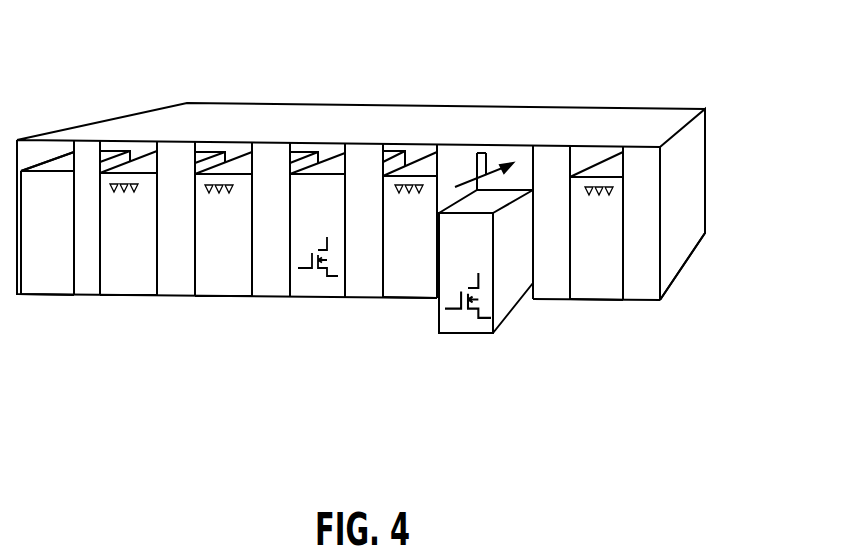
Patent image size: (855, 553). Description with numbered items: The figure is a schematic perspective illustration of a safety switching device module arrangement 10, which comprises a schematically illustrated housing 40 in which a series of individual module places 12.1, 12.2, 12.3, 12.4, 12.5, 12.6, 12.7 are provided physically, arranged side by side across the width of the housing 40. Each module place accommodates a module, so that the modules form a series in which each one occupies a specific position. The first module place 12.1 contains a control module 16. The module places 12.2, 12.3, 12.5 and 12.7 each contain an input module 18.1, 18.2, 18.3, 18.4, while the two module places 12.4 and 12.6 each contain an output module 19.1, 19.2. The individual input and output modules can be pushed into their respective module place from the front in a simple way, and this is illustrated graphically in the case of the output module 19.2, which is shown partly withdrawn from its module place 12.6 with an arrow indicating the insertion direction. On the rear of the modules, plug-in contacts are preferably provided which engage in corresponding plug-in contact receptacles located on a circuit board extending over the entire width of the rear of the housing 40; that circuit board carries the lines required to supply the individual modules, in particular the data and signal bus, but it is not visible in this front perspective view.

The safety switching device module arrangement 10 is at (718, 118).
The housing 40 is at (698, 228).
The module place 12.1 is at (37, 147).
The module place 12.2 is at (148, 147).
The module place 12.3 is at (246, 150).
The module place 12.4 is at (338, 150).
The module place 12.5 is at (427, 155).
The module place 12.6 is at (524, 150).
The module place 12.7 is at (592, 152).
The control module 16 is at (47, 277).
The input module 18.1 is at (126, 277).
The input module 18.2 is at (220, 282).
The input module 18.3 is at (407, 283).
The input module 18.4 is at (613, 288).
The output module 19.1 is at (313, 282).
The output module 19.2 is at (481, 325).